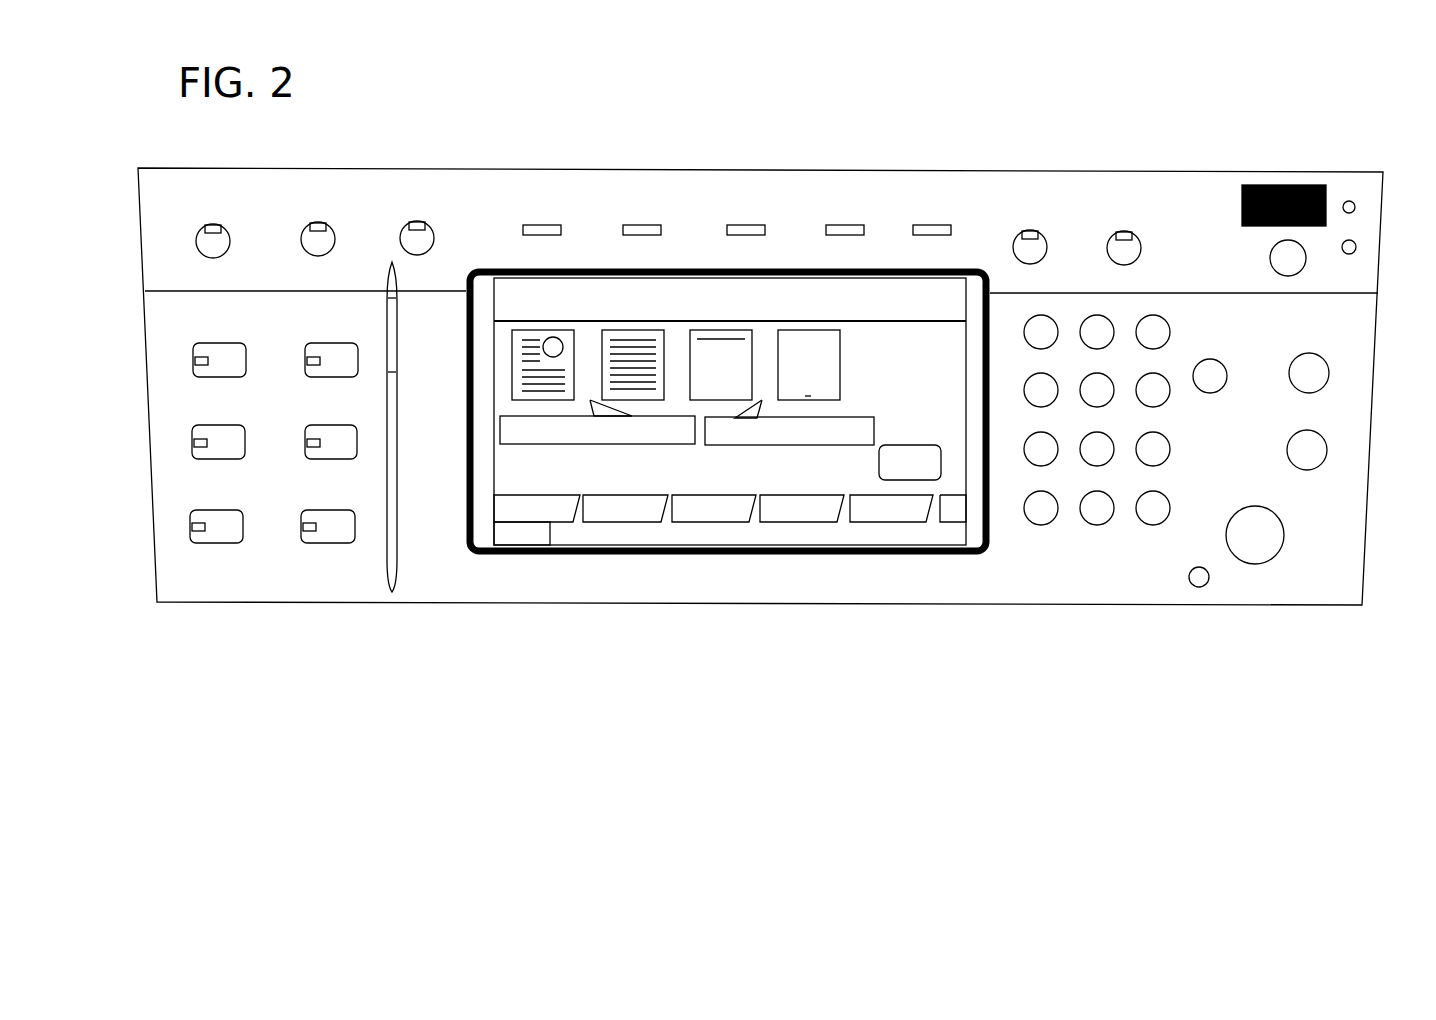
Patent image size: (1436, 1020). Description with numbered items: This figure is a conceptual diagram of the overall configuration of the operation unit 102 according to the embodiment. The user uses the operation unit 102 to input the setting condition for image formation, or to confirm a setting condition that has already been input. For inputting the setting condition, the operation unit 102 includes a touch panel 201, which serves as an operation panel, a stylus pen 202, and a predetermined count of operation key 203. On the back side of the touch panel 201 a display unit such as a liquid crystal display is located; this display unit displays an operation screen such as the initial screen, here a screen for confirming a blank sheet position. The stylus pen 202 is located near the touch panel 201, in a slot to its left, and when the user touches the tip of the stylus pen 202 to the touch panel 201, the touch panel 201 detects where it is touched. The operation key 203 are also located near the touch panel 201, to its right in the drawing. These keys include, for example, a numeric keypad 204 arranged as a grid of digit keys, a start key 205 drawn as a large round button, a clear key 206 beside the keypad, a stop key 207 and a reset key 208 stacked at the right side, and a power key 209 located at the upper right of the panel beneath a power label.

The operation unit 102 is at (770, 618).
The touch panel 201 is at (569, 596).
The stylus pen 202 is at (392, 567).
The operation key 203 is at (1000, 632).
The numeric keypad 204 is at (1090, 555).
The start key 205 is at (1255, 548).
The clear key 206 is at (1203, 386).
The stop key 207 is at (1313, 470).
The reset key 208 is at (1312, 392).
The power key 209 is at (1296, 273).